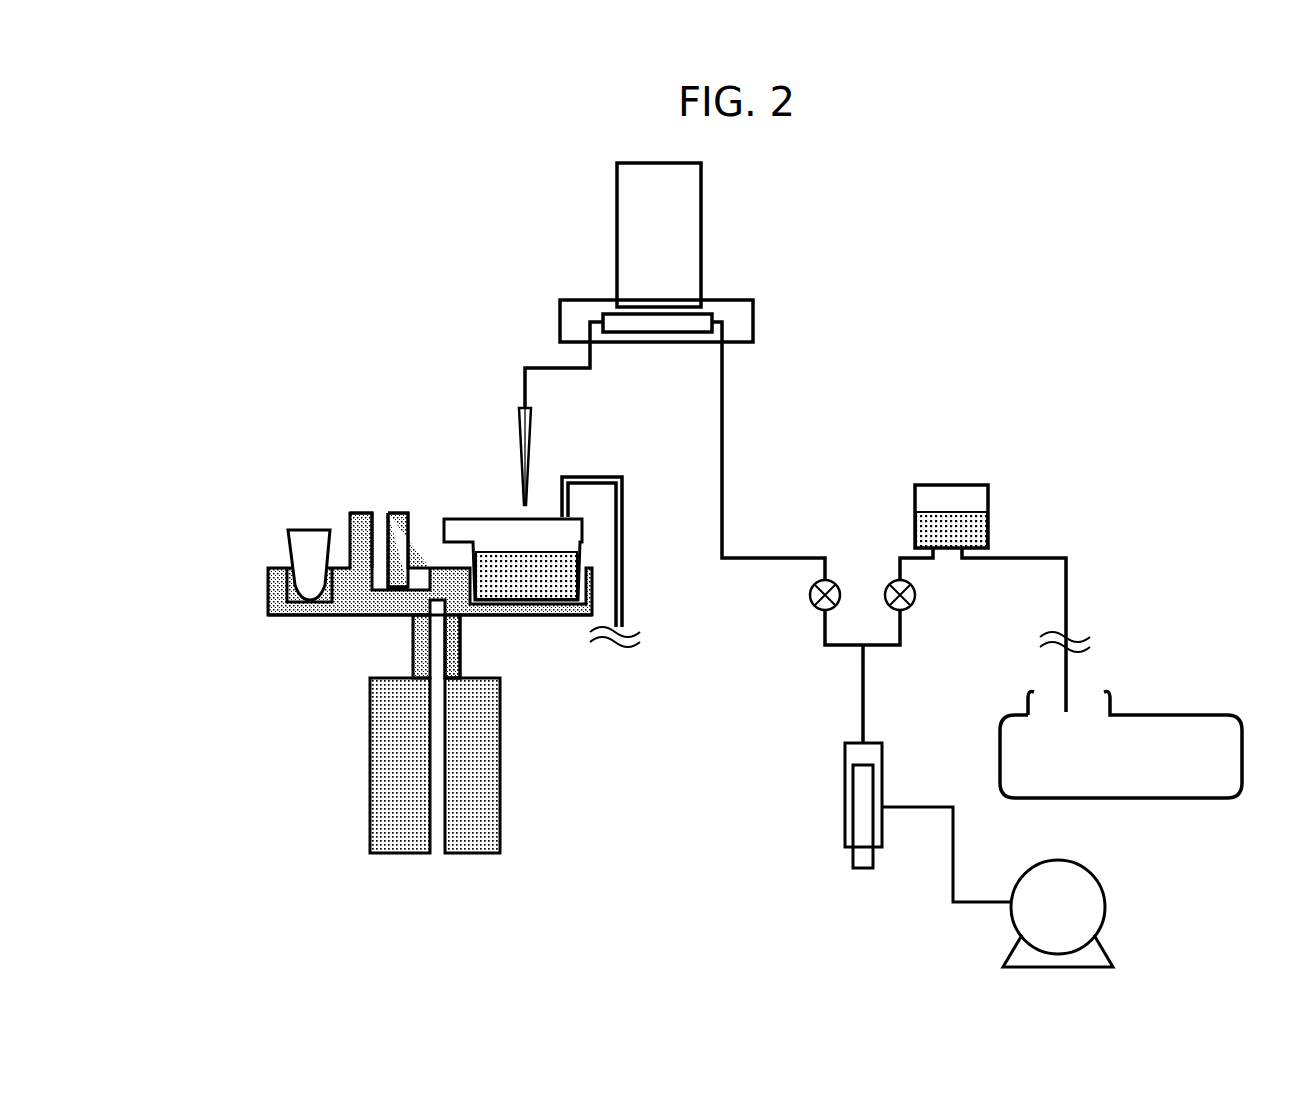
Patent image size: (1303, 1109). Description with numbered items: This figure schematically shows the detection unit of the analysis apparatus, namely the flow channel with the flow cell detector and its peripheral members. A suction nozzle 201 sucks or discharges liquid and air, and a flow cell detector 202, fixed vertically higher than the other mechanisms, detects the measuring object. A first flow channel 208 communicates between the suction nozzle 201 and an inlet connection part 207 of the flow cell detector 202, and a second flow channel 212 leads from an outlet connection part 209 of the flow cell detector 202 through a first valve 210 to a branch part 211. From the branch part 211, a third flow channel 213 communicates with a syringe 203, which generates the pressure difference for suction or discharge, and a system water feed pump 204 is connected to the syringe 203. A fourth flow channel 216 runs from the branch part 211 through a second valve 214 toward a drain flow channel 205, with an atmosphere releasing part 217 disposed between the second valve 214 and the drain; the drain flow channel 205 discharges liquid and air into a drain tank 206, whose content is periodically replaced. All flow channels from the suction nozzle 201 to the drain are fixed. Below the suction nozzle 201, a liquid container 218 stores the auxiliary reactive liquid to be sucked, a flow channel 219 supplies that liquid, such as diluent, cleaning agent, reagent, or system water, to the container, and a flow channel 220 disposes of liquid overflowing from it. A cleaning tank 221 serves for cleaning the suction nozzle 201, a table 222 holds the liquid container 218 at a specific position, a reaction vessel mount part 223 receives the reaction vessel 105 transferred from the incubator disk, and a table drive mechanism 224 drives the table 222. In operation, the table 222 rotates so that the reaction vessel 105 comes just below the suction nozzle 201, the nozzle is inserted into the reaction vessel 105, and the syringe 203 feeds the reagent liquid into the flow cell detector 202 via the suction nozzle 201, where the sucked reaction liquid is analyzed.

The reaction vessel 105 is at (290, 540).
The suction nozzle 201 is at (520, 468).
The flow cell detector 202 is at (680, 326).
The syringe 203 is at (855, 838).
The system water feed pump 204 is at (1083, 921).
The drain flow channel 205 is at (1068, 622).
The drain tank 206 is at (1148, 710).
The inlet connection part 207 is at (600, 322).
The first flow channel 208 is at (540, 362).
The outlet connection part 209 is at (714, 320).
The first valve 210 is at (808, 592).
The branch part 211 is at (858, 650).
The second flow channel 212 is at (740, 522).
The third flow channel 213 is at (865, 712).
The second valve 214 is at (915, 595).
The fourth flow channel 216 is at (897, 568).
The atmosphere releasing part 217 is at (913, 490).
The liquid container 218 is at (468, 520).
The flow channel for supplying auxiliary reactive liquid 219 is at (600, 477).
The overflow disposal flow channel 220 is at (425, 612).
The cleaning tank 221 is at (362, 512).
The table 222 is at (270, 582).
The reaction vessel mount part 223 is at (300, 616).
The table drive mechanism 224 is at (370, 790).